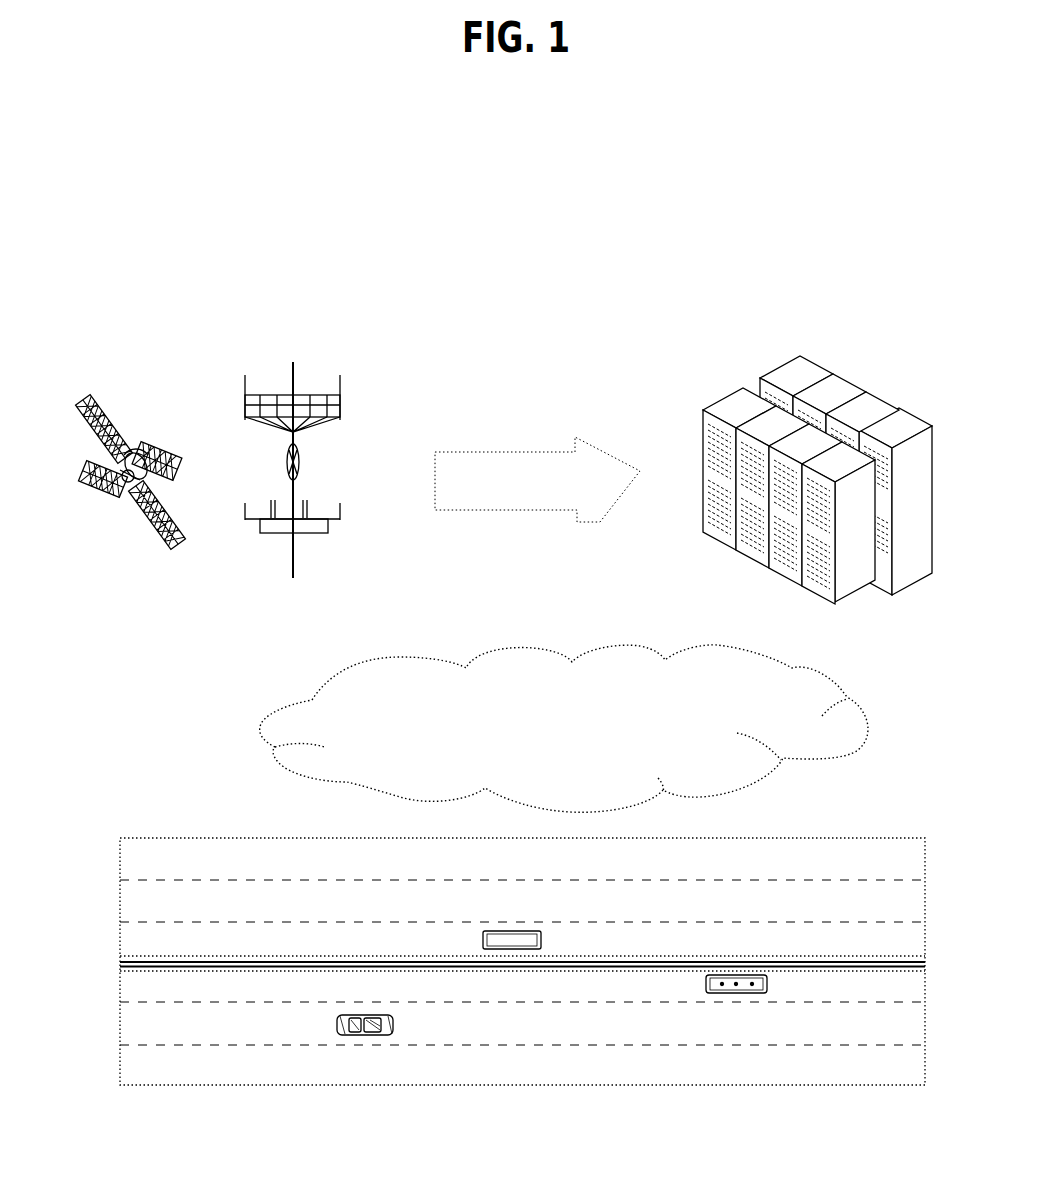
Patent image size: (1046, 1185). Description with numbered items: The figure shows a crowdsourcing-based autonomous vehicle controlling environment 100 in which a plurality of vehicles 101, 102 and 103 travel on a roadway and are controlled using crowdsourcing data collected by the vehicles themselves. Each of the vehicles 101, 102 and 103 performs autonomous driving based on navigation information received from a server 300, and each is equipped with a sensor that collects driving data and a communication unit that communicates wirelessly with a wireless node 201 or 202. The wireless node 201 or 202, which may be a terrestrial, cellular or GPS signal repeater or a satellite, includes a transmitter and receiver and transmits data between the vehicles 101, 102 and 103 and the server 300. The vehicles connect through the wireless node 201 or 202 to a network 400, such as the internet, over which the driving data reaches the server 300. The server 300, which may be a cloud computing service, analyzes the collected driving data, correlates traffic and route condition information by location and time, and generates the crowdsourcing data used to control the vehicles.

The crowdsourcing-based autonomous vehicle controlling environment 100 is at (612, 298).
The vehicle 101 is at (372, 1036).
The vehicle 102 is at (512, 949).
The vehicle 103 is at (735, 994).
The wireless node 201 is at (268, 402).
The wireless node 202 is at (144, 446).
The server 300 is at (884, 402).
The network 400 is at (564, 728).